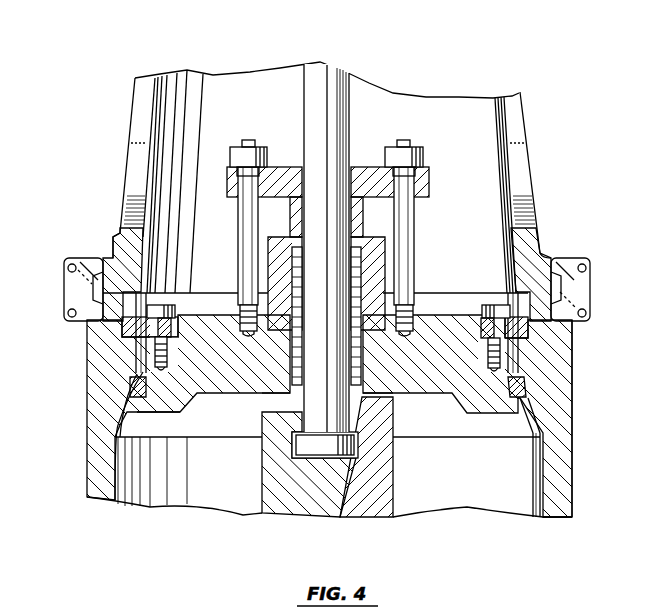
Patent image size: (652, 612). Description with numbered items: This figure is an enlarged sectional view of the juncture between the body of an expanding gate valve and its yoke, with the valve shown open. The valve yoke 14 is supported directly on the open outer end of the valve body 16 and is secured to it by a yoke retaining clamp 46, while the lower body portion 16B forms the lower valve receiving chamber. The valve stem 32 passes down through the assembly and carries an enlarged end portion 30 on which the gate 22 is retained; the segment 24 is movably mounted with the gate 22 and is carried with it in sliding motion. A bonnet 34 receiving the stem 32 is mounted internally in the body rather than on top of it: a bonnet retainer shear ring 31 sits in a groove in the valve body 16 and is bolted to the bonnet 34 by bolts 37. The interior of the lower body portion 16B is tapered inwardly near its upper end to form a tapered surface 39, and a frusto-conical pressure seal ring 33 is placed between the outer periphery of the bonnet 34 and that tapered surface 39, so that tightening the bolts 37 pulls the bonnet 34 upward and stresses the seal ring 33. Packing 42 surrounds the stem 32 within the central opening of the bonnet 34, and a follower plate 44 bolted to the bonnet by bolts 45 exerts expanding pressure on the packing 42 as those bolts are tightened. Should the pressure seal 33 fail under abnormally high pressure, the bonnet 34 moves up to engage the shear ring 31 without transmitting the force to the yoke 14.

The valve yoke 14 is at (508, 97).
The valve body 16 is at (578, 470).
The lower body portion 16B is at (559, 510).
The gate 22 is at (317, 500).
The segment 24 is at (356, 507).
The enlarged end portion 30 is at (293, 450).
The bonnet retainer shear ring 31 is at (123, 337).
The valve stem 32 is at (326, 63).
The pressure seal ring 33 is at (127, 397).
The bonnet 34 is at (452, 395).
The bolts 37 is at (157, 307).
The tapered surface 39 is at (115, 437).
The packing 42 is at (356, 277).
The follower plate 44 is at (358, 167).
The bolts 45 is at (247, 220).
The yoke retaining clamp 46 is at (583, 280).